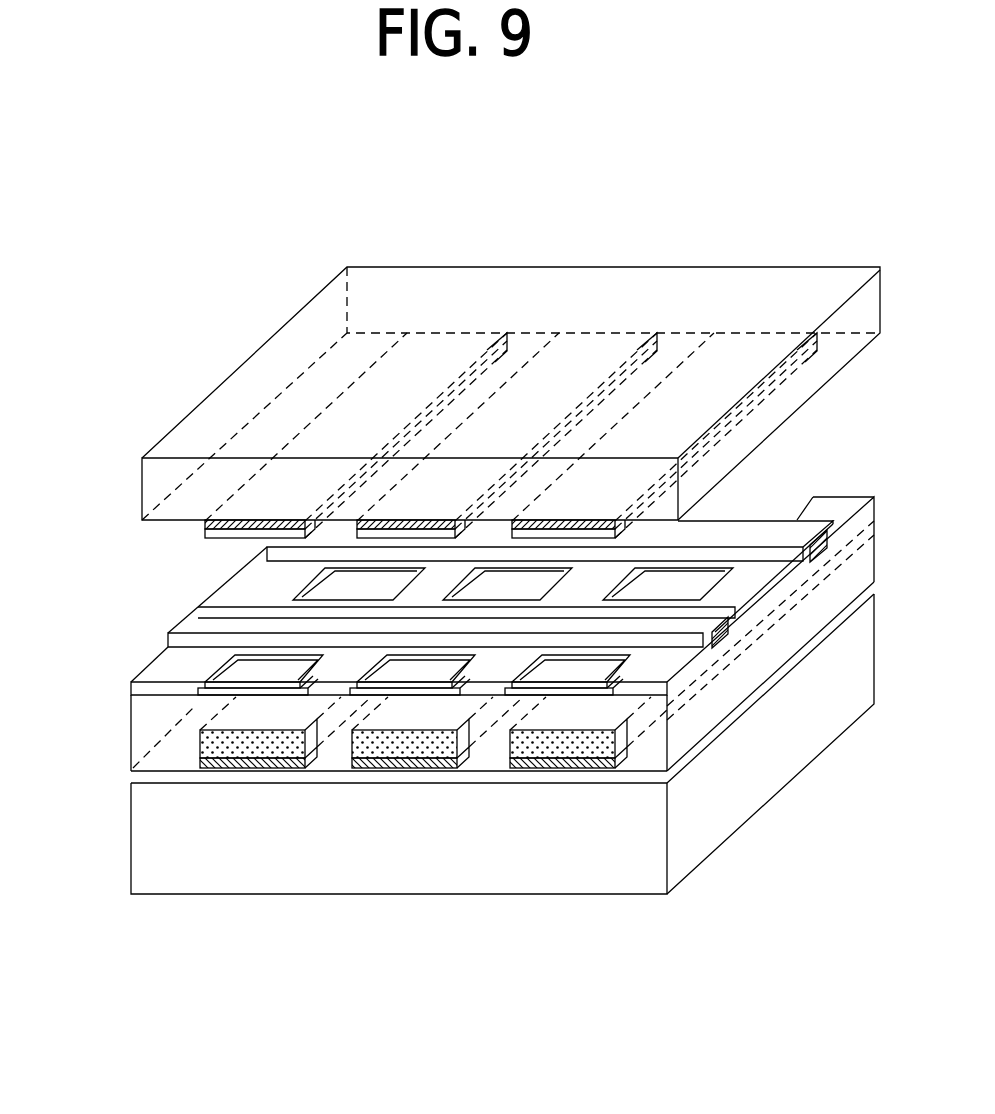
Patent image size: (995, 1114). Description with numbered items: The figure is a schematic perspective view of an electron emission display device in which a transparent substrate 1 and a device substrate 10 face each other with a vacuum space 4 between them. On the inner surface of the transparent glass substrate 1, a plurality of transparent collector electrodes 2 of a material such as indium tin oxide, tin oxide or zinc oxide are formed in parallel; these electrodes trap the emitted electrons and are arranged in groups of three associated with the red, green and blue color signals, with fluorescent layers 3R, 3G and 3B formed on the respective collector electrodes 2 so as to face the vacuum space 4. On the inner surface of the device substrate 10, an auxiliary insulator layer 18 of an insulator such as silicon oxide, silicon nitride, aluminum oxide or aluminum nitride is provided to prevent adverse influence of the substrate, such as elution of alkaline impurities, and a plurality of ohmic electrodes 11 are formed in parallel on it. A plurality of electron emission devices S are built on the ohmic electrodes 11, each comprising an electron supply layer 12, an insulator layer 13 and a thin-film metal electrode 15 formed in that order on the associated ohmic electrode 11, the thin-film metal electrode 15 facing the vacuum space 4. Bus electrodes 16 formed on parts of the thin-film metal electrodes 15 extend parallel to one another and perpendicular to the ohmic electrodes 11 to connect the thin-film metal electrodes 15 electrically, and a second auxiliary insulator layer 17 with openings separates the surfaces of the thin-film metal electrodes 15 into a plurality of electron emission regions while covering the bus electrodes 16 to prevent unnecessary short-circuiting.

The transparent substrate 1 is at (308, 317).
The transparent collector electrodes 2 is at (210, 525).
The red fluorescent layer 3R is at (240, 538).
The green fluorescent layer 3G is at (425, 537).
The blue fluorescent layer 3B is at (585, 535).
The vacuum space 4 is at (862, 446).
The device substrate 10 is at (138, 822).
The ohmic electrodes 11 is at (233, 768).
The electron supply layer 12 is at (545, 757).
The insulator layer 13 is at (138, 722).
The thin-film metal electrode 15 is at (302, 692).
The bus electrodes 16 is at (727, 642).
The second auxiliary insulator layer 17 is at (148, 675).
The auxiliary insulator layer 18 is at (138, 777).
The electron emission device S is at (641, 735).